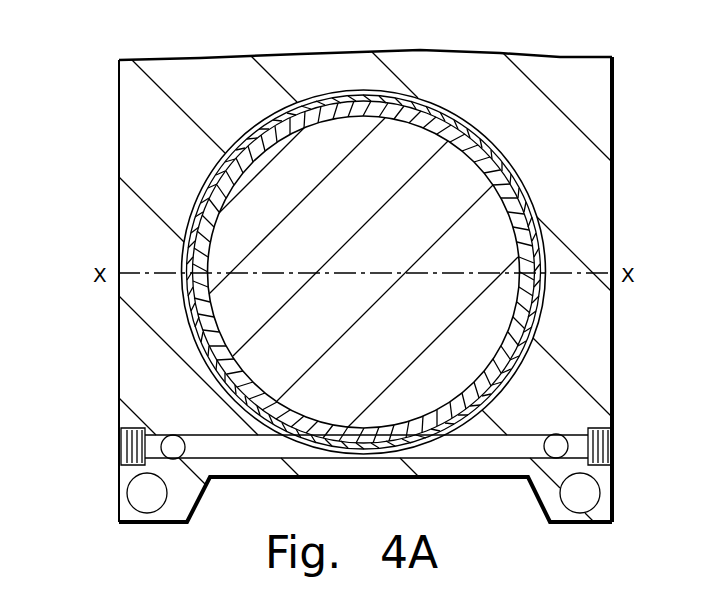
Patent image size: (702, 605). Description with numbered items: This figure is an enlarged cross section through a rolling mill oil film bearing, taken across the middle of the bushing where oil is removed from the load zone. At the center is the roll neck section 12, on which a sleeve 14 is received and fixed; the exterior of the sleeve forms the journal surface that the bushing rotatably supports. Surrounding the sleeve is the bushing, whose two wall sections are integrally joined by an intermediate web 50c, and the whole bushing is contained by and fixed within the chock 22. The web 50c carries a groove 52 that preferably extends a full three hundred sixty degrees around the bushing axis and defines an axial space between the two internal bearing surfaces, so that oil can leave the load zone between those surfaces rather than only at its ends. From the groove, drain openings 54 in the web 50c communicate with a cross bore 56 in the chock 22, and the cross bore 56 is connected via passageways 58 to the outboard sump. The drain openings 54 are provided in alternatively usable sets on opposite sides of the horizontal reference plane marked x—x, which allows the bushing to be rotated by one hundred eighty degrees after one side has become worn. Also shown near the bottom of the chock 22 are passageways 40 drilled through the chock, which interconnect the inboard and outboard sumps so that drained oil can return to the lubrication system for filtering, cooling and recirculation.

The neck section 12 is at (414, 244).
The sleeve 14 is at (250, 130).
The chock 22 is at (157, 72).
The intermediate web 50c is at (349, 90).
The groove 52 is at (534, 197).
The drain openings 54 is at (405, 119).
The cross bore 56 is at (492, 448).
The passageways 58 is at (172, 446).
The passageways 40 is at (147, 493).